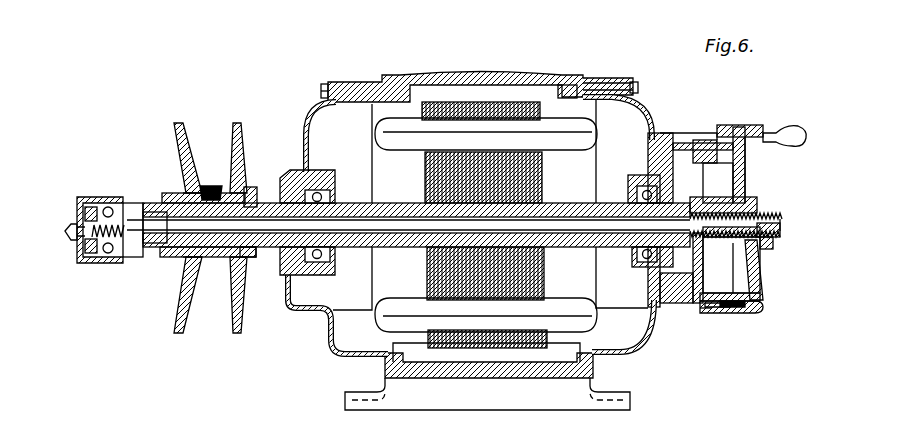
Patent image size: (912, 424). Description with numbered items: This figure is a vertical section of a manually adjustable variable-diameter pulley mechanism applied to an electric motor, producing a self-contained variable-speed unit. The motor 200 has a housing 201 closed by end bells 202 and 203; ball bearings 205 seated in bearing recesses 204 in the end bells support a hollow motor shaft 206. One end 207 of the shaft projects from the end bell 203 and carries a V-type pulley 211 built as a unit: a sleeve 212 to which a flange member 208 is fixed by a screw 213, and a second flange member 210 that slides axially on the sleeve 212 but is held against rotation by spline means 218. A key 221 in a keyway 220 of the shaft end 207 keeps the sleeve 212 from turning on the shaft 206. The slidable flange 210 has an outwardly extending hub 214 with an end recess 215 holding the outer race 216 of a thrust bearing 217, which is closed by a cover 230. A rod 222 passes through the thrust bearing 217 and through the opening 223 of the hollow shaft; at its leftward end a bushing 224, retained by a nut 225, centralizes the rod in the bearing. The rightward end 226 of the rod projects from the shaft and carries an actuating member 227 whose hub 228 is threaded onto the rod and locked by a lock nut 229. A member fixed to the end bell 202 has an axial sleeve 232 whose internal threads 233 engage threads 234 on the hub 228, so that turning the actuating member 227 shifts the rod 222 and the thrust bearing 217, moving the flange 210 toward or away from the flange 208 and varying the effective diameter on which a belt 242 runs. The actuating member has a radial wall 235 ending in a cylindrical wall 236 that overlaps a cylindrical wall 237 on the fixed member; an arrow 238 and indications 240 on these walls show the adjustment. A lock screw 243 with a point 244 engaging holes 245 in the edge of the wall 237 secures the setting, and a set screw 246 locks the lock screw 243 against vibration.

The motor 200 is at (486, 65).
The housing 201 is at (572, 77).
The end bell 202 is at (645, 115).
The end bell 203 is at (312, 127).
The bearing recess 204 is at (287, 295).
The ball bearing 205 is at (320, 264).
The hollow motor shaft 206 is at (610, 200).
The shaft end 207 is at (168, 262).
The flange member 208 is at (238, 122).
The flange member 210 is at (180, 122).
The variable-diameter V-type pulley 211 is at (216, 305).
The sleeve 212 is at (246, 258).
The screw 213 is at (252, 186).
The hub 214 is at (168, 195).
The end recess 215 is at (110, 206).
The outer race 216 is at (114, 258).
The thrust bearing 217 is at (109, 254).
The spline means 218 is at (187, 265).
The keyway 220 is at (313, 182).
The key 221 is at (186, 197).
The rod 222 is at (367, 234).
The opening 223 is at (402, 230).
The bushing 224 is at (100, 199).
The nut 225 is at (82, 243).
The rod end 226 is at (762, 205).
The actuating member 227 is at (765, 240).
The hub 228 is at (780, 214).
The lock nut 229 is at (779, 230).
The cover 230 is at (87, 214).
The axial sleeve 232 is at (707, 200).
The internal threads 233 is at (697, 262).
The threads 234 is at (746, 186).
The radial wall 235 is at (758, 257).
The cylindrical wall 236 is at (735, 308).
The cylindrical wall 237 is at (727, 128).
The arrow 238 is at (690, 137).
The indications 240 is at (694, 140).
The belt 242 is at (208, 185).
The lock screw 243 is at (762, 292).
The point 244 is at (727, 303).
The holes 245 is at (703, 310).
The set screw 246 is at (758, 302).